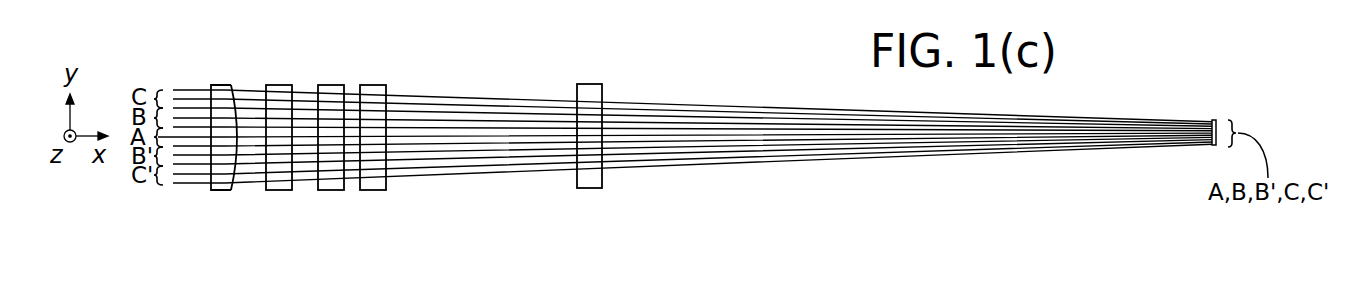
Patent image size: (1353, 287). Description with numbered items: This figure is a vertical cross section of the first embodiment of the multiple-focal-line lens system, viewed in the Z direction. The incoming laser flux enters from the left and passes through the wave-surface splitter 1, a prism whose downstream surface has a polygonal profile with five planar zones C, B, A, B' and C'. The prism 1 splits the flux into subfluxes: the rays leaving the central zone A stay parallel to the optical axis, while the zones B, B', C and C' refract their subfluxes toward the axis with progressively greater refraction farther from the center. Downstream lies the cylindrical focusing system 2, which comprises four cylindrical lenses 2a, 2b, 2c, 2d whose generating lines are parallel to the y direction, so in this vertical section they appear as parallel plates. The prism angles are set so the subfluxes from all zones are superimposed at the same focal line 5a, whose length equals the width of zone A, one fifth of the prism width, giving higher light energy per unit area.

The wave-surface splitter 1 is at (221, 90).
The cylindrical focusing system 2 is at (597, 71).
The cylindrical lens 2a is at (273, 190).
The cylindrical lens 2b is at (325, 190).
The cylindrical lens 2c is at (367, 190).
The cylindrical lens 2d is at (588, 188).
The focal line 5a is at (1216, 122).